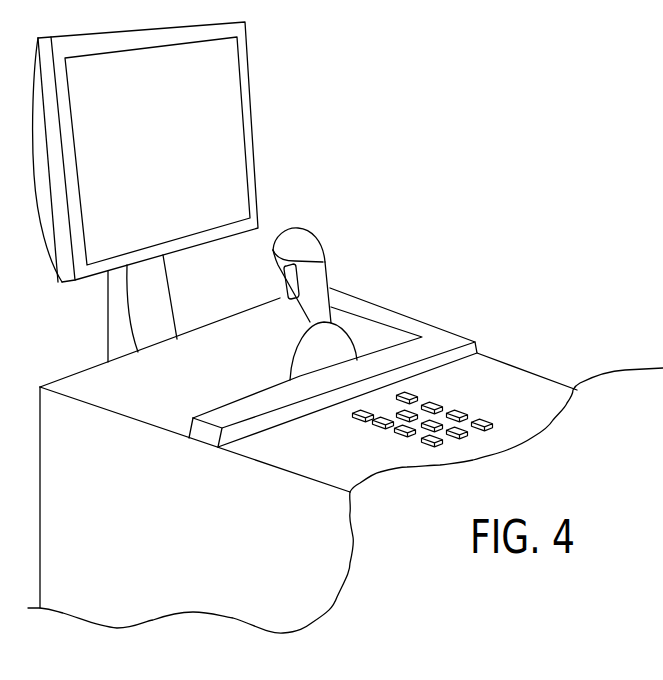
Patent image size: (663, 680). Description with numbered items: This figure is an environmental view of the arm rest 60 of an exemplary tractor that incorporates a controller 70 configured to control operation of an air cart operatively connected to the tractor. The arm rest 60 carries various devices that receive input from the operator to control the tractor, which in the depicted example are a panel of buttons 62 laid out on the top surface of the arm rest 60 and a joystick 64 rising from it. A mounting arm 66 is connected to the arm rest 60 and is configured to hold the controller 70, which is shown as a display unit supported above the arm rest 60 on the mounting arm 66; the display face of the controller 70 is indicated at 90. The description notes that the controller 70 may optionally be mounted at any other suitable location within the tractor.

The arm rest 60 is at (490, 356).
The panel of buttons 62 is at (471, 398).
The joystick 64 is at (340, 266).
The mounting arm 66 is at (101, 322).
The controller 70 is at (174, 152).
The display screen 90 is at (227, 81).